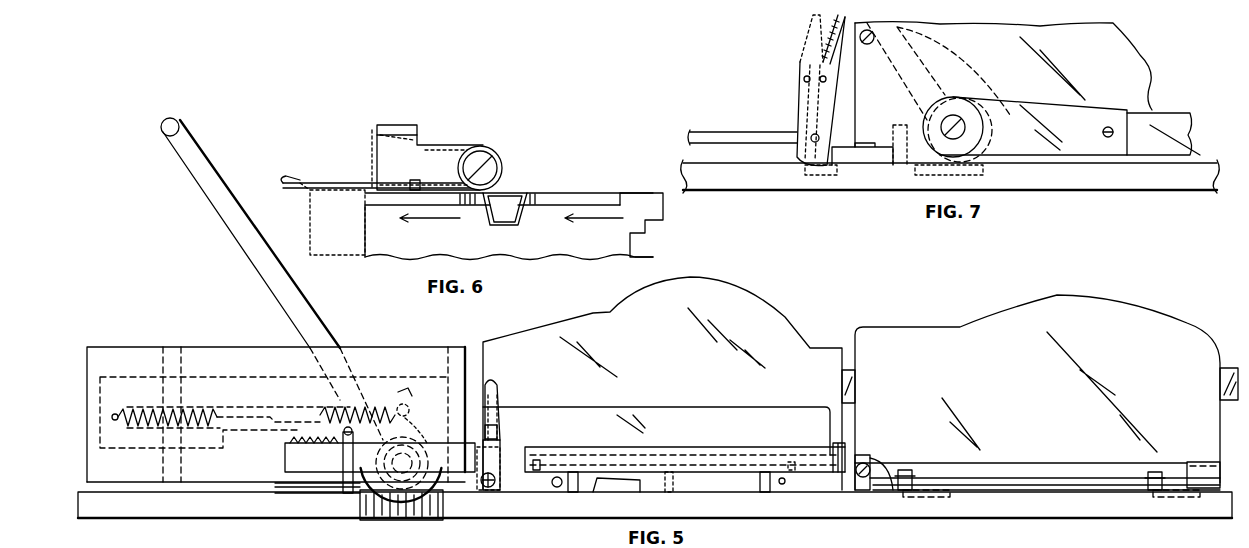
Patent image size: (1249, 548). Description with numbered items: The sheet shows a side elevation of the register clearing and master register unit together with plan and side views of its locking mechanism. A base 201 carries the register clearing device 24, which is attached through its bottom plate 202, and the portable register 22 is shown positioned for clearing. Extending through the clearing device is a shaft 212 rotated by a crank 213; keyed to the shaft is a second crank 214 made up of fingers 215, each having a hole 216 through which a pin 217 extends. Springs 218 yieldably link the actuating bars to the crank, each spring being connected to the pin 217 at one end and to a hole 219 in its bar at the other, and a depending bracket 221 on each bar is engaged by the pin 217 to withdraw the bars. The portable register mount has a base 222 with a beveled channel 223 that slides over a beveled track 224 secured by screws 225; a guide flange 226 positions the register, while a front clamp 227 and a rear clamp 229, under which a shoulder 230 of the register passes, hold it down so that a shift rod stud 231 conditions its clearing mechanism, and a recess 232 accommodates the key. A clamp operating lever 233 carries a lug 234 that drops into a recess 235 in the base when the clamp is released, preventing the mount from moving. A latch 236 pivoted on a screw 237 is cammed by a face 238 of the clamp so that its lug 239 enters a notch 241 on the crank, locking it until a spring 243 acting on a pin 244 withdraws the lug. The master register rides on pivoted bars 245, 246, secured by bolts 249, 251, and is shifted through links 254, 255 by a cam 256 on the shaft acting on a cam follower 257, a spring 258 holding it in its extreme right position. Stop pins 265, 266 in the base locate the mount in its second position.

In FIG. 5, the portable register 22 is at (794, 312).
In FIG. 7, the register clearing device 24 is at (1152, 72).
In FIG. 5, the base 201 is at (740, 519).
In FIG. 5, the bottom plate 202 is at (140, 490).
In FIG. 5, the shaft 212 is at (362, 518).
In FIG. 5, the crank 213 is at (195, 158).
In FIG. 7, the crank 213 is at (1083, 125).
In FIG. 5, the crank 214 is at (410, 462).
In FIG. 5, the fingers 215 is at (417, 430).
In FIG. 5, the hole 216 is at (405, 410).
In FIG. 5, the pin 217 is at (410, 393).
In FIG. 5, the springs 218 is at (195, 405).
In FIG. 5, the hole 219 is at (116, 412).
In FIG. 5, the depending bracket 221 is at (345, 398).
In FIG. 5, the base 222 is at (573, 492).
In FIG. 5, the beveled channel 223 is at (762, 492).
In FIG. 5, the beveled track 224 is at (630, 490).
In FIG. 5, the screws 225 is at (669, 492).
In FIG. 5, the guide flange 226 is at (685, 432).
In FIG. 5, the front clamp 227 is at (500, 424).
In FIG. 6, the front clamp 227 is at (513, 205).
In FIG. 5, the rear clamp 229 is at (868, 455).
In FIG. 5, the shoulder 230 is at (840, 443).
In FIG. 5, the shift rod stud 231 is at (545, 467).
In FIG. 5, the recess 232 is at (790, 462).
In FIG. 5, the clamp operating lever 233 is at (500, 392).
In FIG. 7, the clamp operating lever 233 is at (820, 108).
In FIG. 5, the lug 234 is at (475, 495).
In FIG. 5, the recess 235 is at (495, 492).
In FIG. 6, the latch 236 is at (433, 150).
In FIG. 7, the latch 236 is at (887, 158).
In FIG. 6, the screw 237 is at (485, 148).
In FIG. 7, the screw 237 is at (868, 145).
In FIG. 6, the face 238 is at (565, 193).
In FIG. 6, the lug 239 is at (388, 125).
In FIG. 7, the notch 241 is at (910, 115).
In FIG. 6, the spring 243 is at (340, 183).
In FIG. 6, the pin 244 is at (425, 188).
In FIG. 5, the bar 245 is at (940, 485).
In FIG. 5, the bar 246 is at (1142, 472).
In FIG. 5, the bolt 249 is at (905, 490).
In FIG. 5, the bolt 251 is at (1180, 495).
In FIG. 5, the link 254 is at (1022, 478).
In FIG. 5, the link 255 is at (820, 492).
In FIG. 5, the cam 256 is at (350, 496).
In FIG. 5, the cam follower 257 is at (343, 490).
In FIG. 5, the spring 258 is at (300, 450).
In FIG. 5, the stop pin 265 is at (557, 490).
In FIG. 5, the stop pin 266 is at (784, 488).